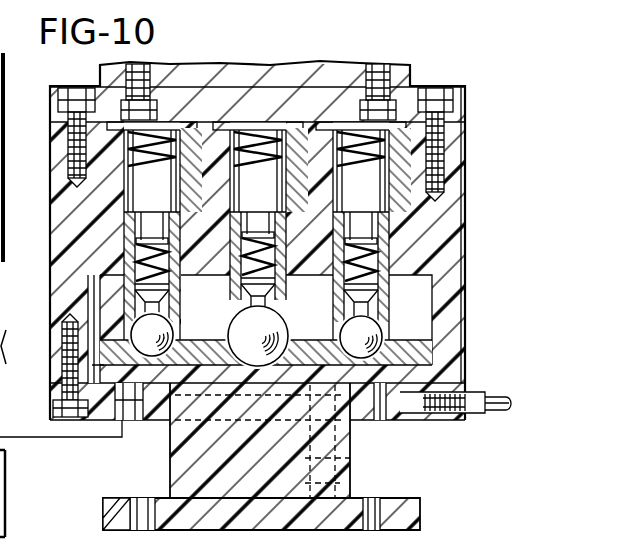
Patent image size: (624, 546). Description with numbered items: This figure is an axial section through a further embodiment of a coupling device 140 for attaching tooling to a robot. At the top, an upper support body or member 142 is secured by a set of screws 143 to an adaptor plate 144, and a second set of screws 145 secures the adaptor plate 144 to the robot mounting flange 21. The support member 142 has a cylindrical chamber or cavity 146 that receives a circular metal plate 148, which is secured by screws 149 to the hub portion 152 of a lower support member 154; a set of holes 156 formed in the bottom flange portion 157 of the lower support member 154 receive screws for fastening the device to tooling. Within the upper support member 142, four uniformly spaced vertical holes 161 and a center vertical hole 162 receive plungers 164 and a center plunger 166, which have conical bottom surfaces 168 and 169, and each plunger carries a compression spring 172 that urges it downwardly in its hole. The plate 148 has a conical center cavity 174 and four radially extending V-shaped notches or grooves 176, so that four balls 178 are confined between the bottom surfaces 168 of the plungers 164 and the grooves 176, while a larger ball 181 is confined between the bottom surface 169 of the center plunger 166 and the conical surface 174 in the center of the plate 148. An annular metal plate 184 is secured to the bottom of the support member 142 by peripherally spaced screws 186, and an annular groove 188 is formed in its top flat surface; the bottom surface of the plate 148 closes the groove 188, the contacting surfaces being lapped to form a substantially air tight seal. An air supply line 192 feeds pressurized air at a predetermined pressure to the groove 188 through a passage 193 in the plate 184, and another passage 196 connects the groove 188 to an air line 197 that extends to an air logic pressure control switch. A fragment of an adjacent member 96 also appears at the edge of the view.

The coupling device 140 is at (480, 100).
The upper support body 142 is at (467, 165).
The robot mounting flange 21 is at (236, 76).
The adaptor plate 144 is at (290, 92).
The screws 143 is at (78, 94).
The screws 145 is at (156, 66).
The compression spring 172 is at (236, 80).
The plungers 164 is at (176, 214).
The center vertical hole 162 is at (240, 225).
The vertical holes 161 is at (128, 242).
The V-shaped notches 176 is at (434, 342).
The cylindrical chamber 146 is at (97, 292).
The circular metal plate 148 is at (436, 370).
The conical center cavity 174 is at (243, 327).
The larger ball 181 is at (283, 322).
The balls 178 is at (382, 326).
The conical bottom surface 169 is at (280, 300).
The center plunger 166 is at (250, 300).
The conical bottom surfaces 168 is at (374, 310).
The screws 186 is at (62, 350).
The annular metal plate 184 is at (88, 403).
The annular groove 188 is at (100, 368).
The passage 196 is at (124, 420).
The air line 197 is at (52, 438).
The hub portion 152 is at (178, 477).
The screws 149 is at (342, 466).
The lower support member 154 is at (418, 506).
The holes 156 is at (133, 500).
The bottom flange portion 157 is at (103, 514).
The passage 193 is at (414, 414).
The air supply line 192 is at (507, 420).
The frame member 96 is at (10, 234).